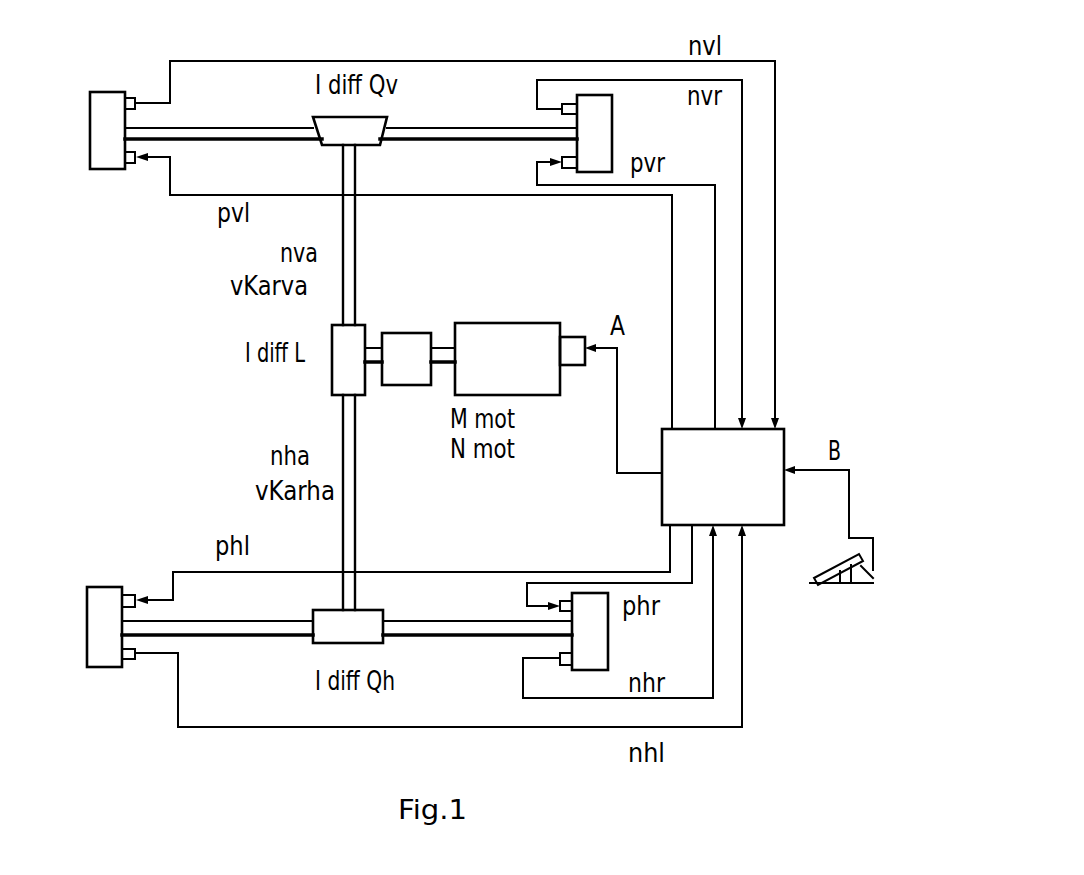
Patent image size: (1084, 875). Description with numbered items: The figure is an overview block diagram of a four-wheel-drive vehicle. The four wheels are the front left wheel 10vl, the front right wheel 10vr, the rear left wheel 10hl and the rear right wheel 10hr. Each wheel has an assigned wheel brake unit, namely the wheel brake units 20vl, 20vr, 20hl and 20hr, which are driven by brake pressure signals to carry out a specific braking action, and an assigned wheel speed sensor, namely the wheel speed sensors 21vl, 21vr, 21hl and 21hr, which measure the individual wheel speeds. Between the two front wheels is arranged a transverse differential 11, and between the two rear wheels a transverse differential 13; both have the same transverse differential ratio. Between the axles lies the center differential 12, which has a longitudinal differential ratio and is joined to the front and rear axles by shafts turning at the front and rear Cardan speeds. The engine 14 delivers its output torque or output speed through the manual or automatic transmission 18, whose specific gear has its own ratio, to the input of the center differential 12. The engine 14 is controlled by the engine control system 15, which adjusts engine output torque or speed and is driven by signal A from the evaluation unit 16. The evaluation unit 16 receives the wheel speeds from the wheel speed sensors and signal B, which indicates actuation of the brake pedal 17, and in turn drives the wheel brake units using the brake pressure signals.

The front left wheel 10vl is at (96, 150).
The front left wheel speed sensor 21vl is at (128, 97).
The front left wheel brake unit 20vl is at (129, 164).
The transverse differential 11 is at (372, 132).
The front right wheel 10vr is at (603, 128).
The front right wheel speed sensor 21vr is at (562, 107).
The front right wheel brake unit 20vr is at (562, 172).
The center differential 12 is at (355, 335).
The transmission 18 is at (406, 385).
The engine 14 is at (500, 330).
The engine control system 15 is at (578, 338).
The evaluation unit 16 is at (780, 440).
The brake pedal 17 is at (831, 586).
The rear left wheel 10hl is at (98, 660).
The rear left wheel brake unit 20hl is at (130, 594).
The rear left wheel speed sensor 21hl is at (126, 662).
The transverse differential 13 is at (370, 616).
The rear right wheel 10hr is at (600, 640).
The rear right wheel brake unit 20hr is at (560, 612).
The rear right wheel speed sensor 21hr is at (560, 664).